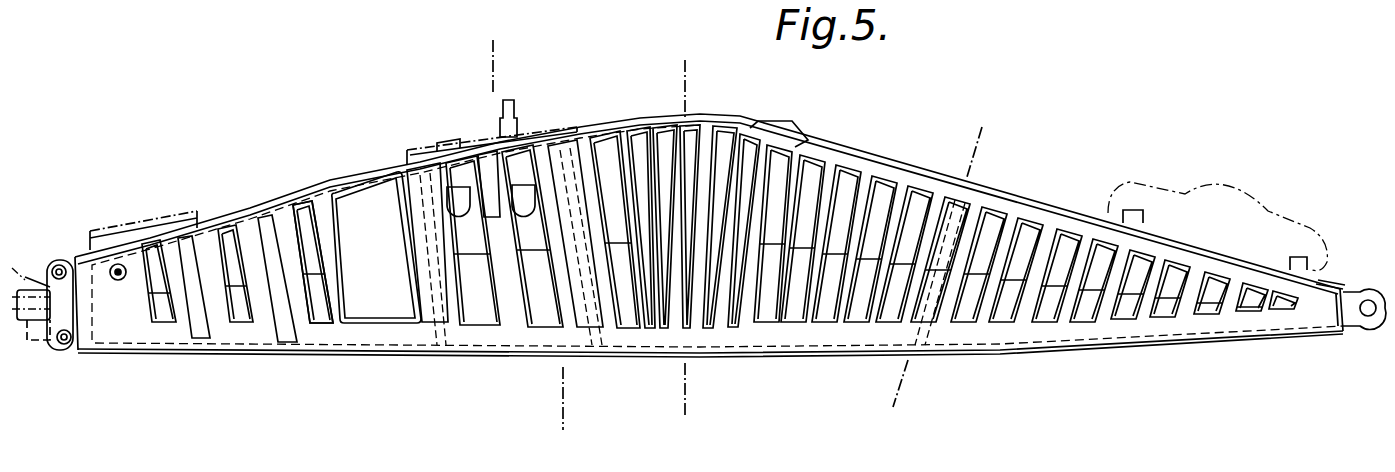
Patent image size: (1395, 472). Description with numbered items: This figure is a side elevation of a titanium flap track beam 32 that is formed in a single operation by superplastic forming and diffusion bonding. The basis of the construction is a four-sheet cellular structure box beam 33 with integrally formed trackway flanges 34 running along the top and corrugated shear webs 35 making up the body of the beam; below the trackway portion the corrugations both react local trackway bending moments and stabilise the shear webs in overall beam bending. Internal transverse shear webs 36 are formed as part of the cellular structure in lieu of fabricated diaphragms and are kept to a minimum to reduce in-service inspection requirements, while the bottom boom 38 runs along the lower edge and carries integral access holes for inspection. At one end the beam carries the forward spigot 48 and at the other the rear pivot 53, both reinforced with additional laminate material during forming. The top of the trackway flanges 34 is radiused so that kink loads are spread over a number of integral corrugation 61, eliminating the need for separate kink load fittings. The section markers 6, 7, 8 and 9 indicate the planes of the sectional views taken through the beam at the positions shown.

The flap track beam 32 is at (987, 303).
The cellular structure box beam 33 is at (477, 310).
The trackway flanges 34 is at (867, 157).
The corrugated shear webs 35 is at (547, 303).
The internal transverse shear webs 36 is at (593, 193).
The bottom boom 38 is at (1123, 342).
The forward spigot 48 is at (63, 307).
The rear pivot 53 is at (1370, 303).
The integral corrugation 61 is at (643, 153).
The section line 6- 6 is at (775, 380).
The section line 7- 7 is at (965, 135).
The section line 8- 8 is at (674, 82).
The section line 9- 9 is at (480, 67).